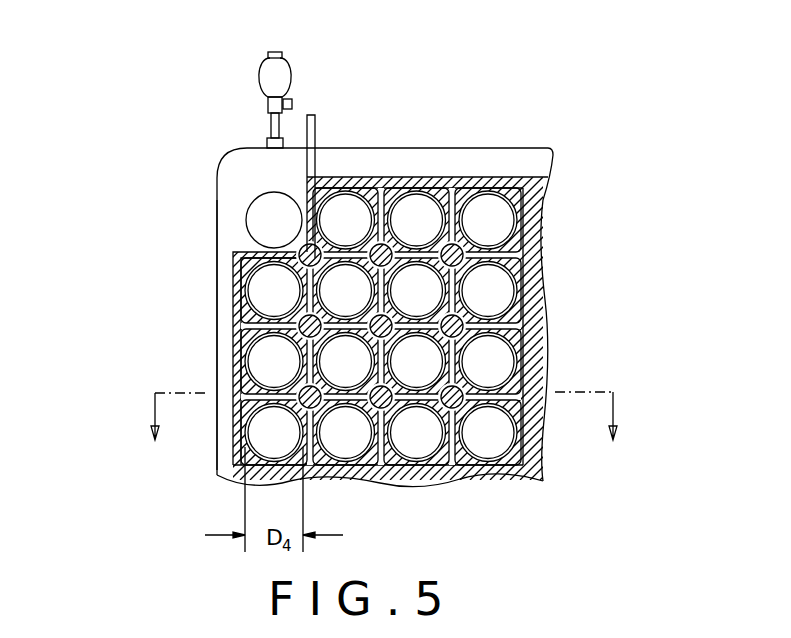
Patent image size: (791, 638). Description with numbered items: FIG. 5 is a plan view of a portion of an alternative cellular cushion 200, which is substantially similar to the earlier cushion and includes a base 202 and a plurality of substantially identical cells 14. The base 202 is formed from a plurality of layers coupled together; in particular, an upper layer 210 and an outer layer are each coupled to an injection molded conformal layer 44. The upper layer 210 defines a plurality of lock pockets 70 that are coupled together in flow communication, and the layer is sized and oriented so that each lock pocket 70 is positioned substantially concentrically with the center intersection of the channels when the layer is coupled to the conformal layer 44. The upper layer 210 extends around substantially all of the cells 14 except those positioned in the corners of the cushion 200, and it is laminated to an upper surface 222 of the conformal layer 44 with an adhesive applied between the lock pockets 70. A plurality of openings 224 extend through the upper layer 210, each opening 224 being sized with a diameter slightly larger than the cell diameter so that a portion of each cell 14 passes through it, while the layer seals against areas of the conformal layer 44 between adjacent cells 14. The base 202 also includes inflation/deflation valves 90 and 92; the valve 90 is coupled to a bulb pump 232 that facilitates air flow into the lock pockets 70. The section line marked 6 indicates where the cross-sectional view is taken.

The cellular cushion 200 is at (585, 178).
The base 202 is at (163, 150).
The upper layer 210 is at (515, 177).
The conformal layer 44 is at (401, 163).
The upper surface 222 is at (217, 258).
The opening 224 is at (502, 350).
The cell 14 is at (285, 234).
The lock pocket 70 is at (452, 250).
The inflation/deflation valve 90 is at (317, 157).
The inflation/deflation valve 92 is at (268, 146).
The bulb pump 232 is at (292, 74).
The section line 6- 6 is at (383, 433).